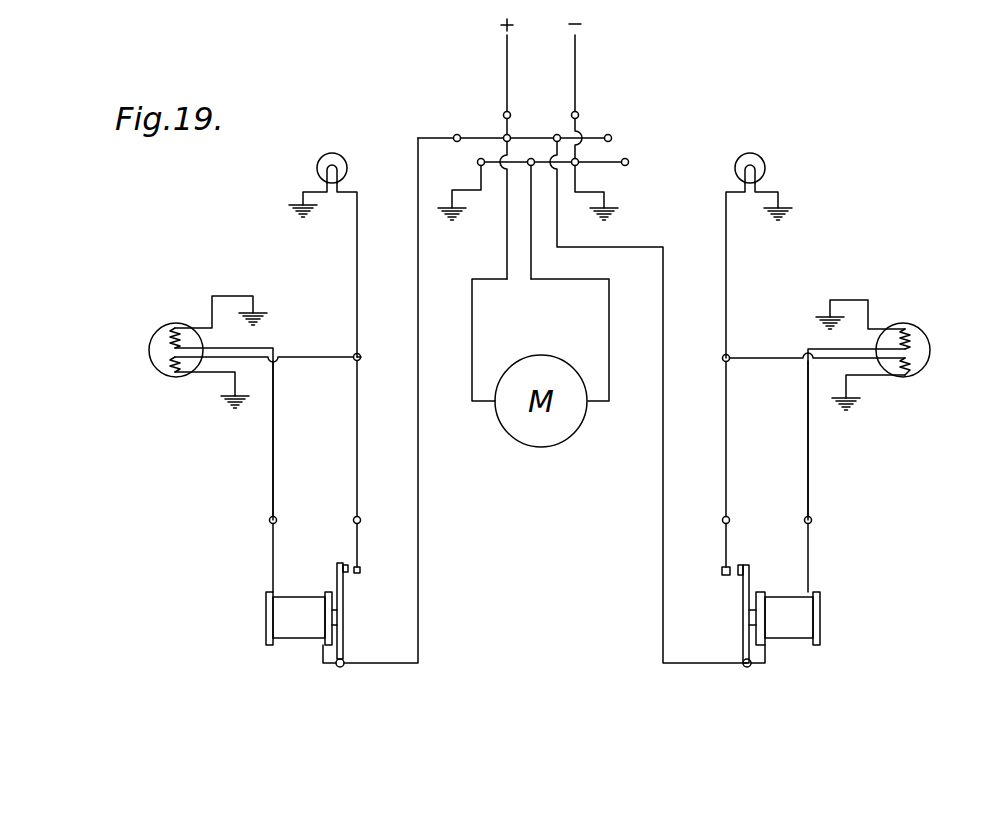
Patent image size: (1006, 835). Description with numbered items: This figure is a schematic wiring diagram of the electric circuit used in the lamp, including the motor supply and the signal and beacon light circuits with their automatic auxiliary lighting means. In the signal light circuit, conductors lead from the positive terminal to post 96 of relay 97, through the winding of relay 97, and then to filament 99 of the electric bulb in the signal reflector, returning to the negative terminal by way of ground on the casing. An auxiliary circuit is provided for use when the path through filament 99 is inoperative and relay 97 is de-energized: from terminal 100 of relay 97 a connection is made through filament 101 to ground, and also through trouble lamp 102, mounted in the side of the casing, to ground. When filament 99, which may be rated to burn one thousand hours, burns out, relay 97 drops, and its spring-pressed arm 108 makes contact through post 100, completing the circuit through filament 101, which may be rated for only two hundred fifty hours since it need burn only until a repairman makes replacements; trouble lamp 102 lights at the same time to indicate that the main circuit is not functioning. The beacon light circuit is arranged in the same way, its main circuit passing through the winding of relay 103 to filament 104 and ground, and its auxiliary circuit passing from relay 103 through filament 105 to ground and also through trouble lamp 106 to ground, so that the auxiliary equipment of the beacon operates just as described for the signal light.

The post 96 is at (343, 668).
The relay 97 is at (315, 632).
The filament 99 is at (165, 333).
The terminal 100 is at (361, 568).
The filament 101 is at (165, 372).
The trouble lamp 102 is at (343, 159).
The relay 103 is at (795, 635).
The filament 104 is at (915, 340).
The filament 105 is at (918, 362).
The trouble lamp 106 is at (765, 162).
The arm 108 is at (347, 598).